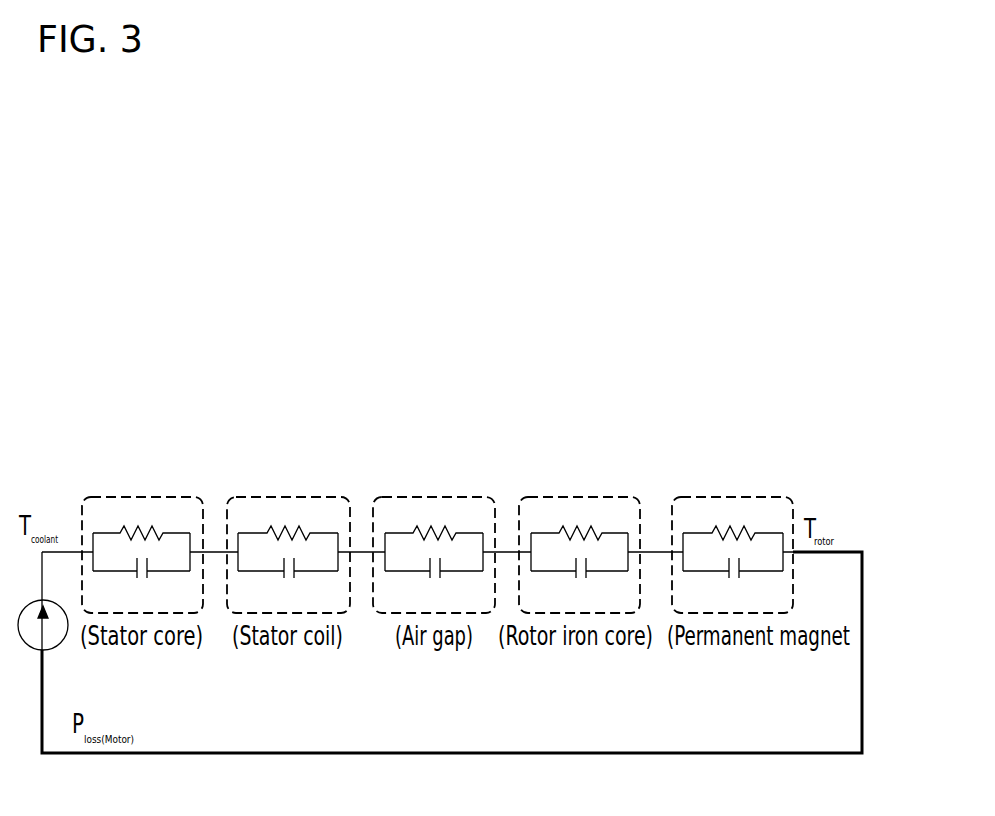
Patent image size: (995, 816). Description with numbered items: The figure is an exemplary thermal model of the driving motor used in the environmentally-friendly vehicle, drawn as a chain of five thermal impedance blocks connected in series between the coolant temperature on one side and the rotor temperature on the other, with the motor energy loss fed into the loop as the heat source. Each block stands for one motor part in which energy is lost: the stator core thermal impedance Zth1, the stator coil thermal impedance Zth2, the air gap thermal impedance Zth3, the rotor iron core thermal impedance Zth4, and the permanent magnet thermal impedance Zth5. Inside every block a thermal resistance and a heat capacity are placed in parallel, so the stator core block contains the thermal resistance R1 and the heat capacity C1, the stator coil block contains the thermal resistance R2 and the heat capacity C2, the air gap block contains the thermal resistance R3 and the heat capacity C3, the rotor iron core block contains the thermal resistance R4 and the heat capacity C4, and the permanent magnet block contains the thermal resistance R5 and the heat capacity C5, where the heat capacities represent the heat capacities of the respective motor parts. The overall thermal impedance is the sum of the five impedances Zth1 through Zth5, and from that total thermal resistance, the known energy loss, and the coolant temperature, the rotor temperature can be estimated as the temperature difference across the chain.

The thermal impedance of stator core Zth1 is at (142, 537).
The thermal impedance of stator coil Zth2 is at (288, 537).
The thermal impedance of air gap Zth3 is at (434, 537).
The thermal impedance of rotor iron core Zth4 is at (579, 537).
The thermal impedance of permanent magnet Zth5 is at (732, 537).
The thermal resistance of stator core R1 is at (141, 534).
The thermal resistance of stator coil R2 is at (288, 534).
The thermal resistance of air gap R3 is at (434, 534).
The thermal resistance of rotor iron core R4 is at (579, 534).
The thermal resistance of permanent magnet R5 is at (733, 534).
The heat capacity of stator core C1 is at (141, 584).
The heat capacity of stator coil C2 is at (288, 584).
The heat capacity of air gap C3 is at (434, 584).
The heat capacity of rotor iron core C4 is at (579, 584).
The heat capacity of permanent magnet C5 is at (733, 584).